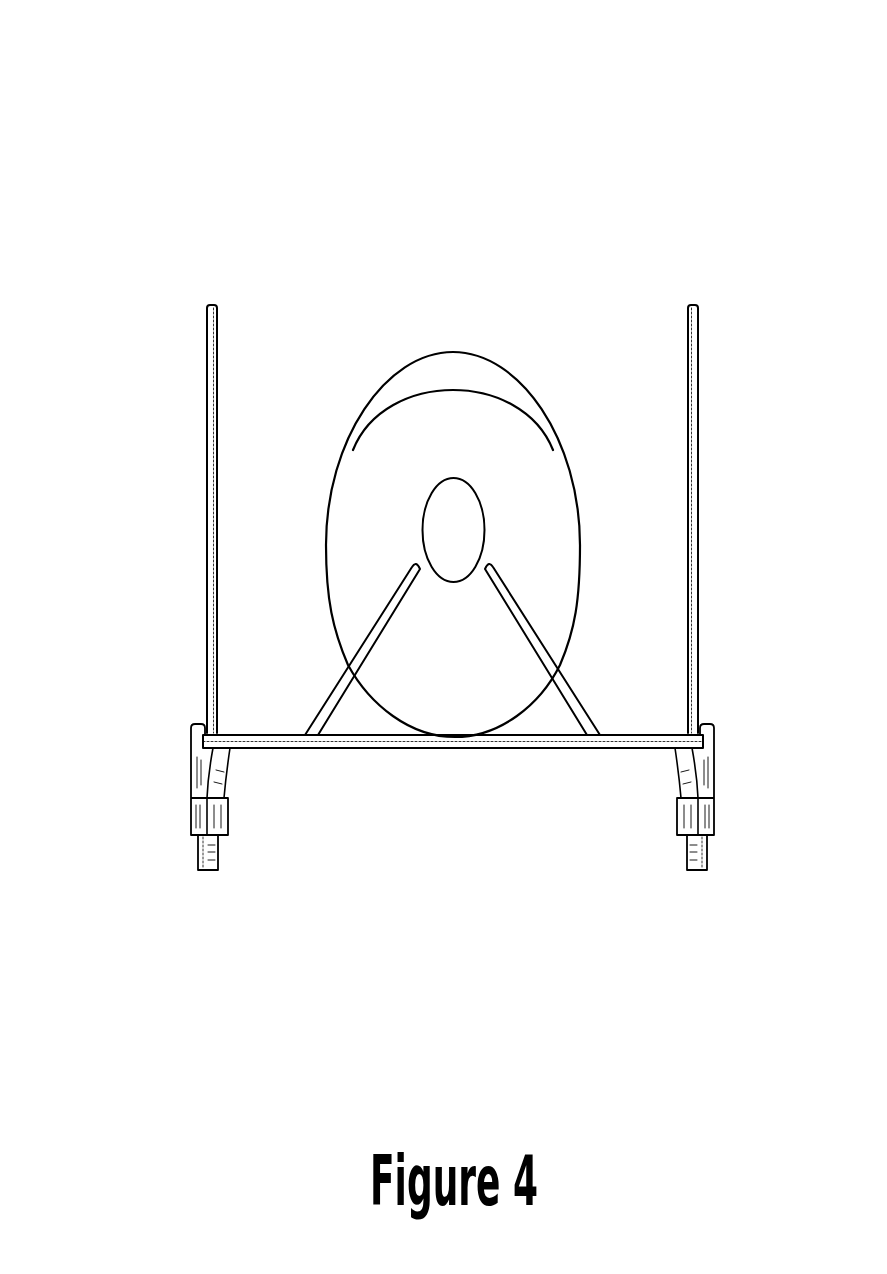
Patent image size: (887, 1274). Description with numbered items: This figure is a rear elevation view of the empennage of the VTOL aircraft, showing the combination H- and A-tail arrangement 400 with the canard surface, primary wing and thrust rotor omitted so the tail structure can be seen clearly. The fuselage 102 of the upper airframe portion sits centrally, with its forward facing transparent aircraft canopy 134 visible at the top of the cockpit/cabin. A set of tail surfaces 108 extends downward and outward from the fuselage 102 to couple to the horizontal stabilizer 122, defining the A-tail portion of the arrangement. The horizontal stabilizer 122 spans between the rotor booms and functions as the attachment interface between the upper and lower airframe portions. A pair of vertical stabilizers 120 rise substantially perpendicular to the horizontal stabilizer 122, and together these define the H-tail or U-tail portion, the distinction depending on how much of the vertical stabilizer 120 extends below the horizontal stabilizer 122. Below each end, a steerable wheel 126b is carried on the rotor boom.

The combination H- and A-tail arrangement 400 is at (370, 446).
The vertical stabilizers 120 is at (204, 434).
The horizontal stabilizer 122 is at (376, 754).
The fuselage 102 is at (574, 508).
The aircraft canopy 134 is at (504, 369).
The tail surfaces 108 is at (316, 703).
The steerable wheel 126b is at (214, 876).